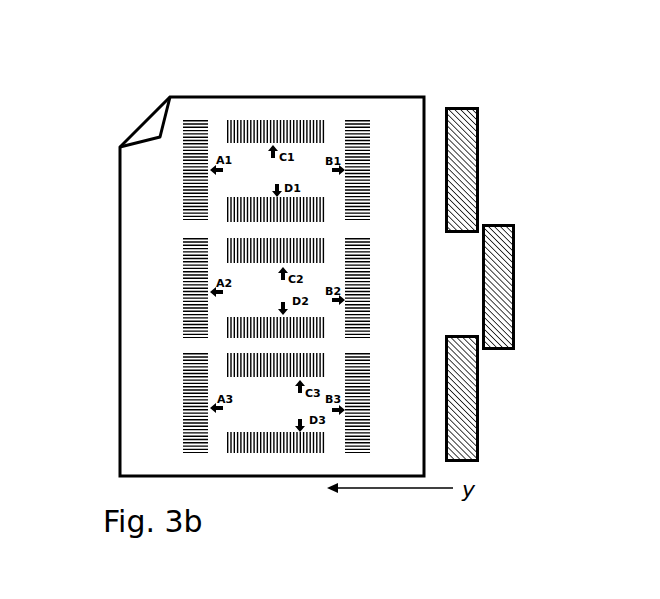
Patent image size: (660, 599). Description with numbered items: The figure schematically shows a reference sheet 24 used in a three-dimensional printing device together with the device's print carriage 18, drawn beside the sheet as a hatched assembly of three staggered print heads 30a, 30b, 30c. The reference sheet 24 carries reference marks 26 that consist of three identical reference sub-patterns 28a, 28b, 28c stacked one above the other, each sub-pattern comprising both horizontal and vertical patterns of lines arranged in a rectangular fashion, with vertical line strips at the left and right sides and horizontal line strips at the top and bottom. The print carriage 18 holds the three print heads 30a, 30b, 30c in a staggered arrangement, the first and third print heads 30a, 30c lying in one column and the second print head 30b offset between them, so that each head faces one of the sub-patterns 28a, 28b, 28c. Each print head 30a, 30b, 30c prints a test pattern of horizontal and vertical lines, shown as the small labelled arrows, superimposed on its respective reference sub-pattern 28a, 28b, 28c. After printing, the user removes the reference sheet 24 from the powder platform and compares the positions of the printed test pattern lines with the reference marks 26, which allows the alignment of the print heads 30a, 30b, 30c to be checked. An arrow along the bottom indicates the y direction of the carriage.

The reference sheet 24 is at (333, 97).
The reference marks 26 is at (157, 314).
The first reference sub-pattern 28a is at (383, 190).
The second reference sub-pattern 28b is at (383, 291).
The third reference sub-pattern 28c is at (383, 411).
The first print head 30a is at (479, 175).
The second print head 30b is at (515, 280).
The third print head 30c is at (479, 408).
The print carriage 18 is at (533, 134).